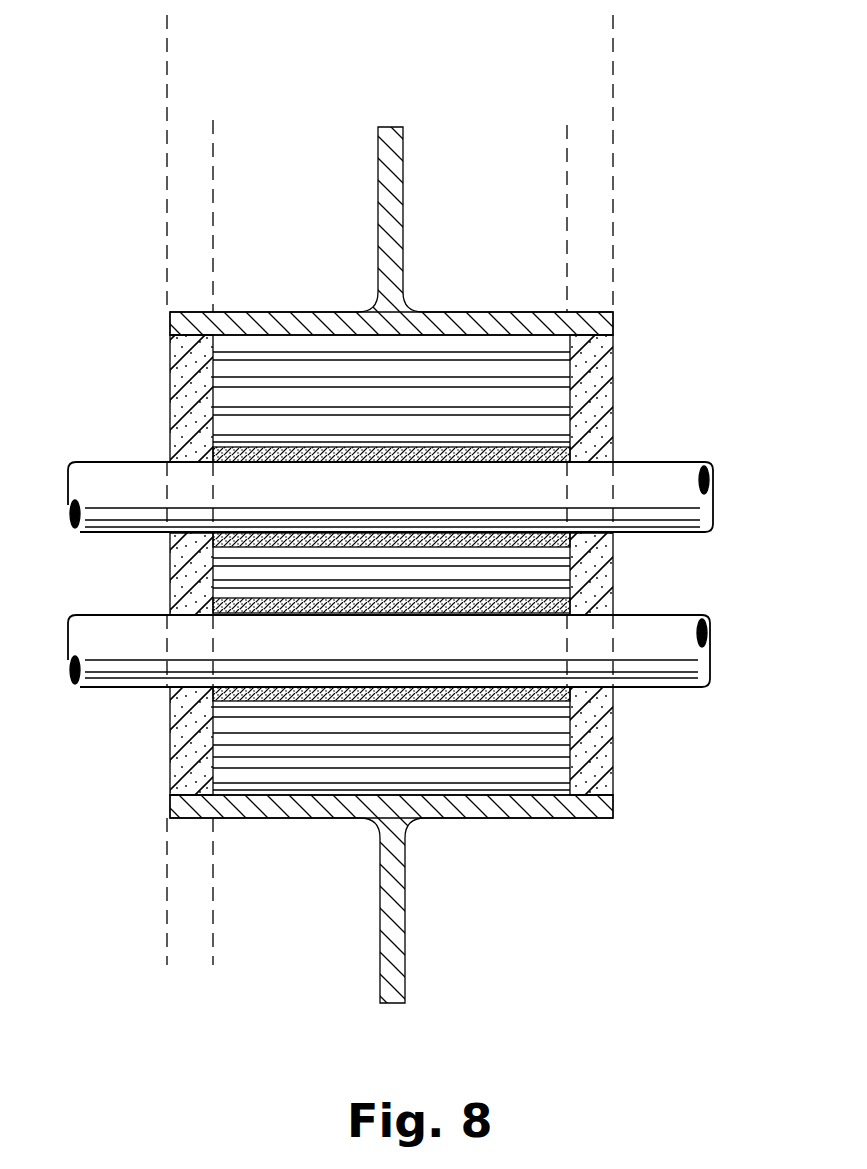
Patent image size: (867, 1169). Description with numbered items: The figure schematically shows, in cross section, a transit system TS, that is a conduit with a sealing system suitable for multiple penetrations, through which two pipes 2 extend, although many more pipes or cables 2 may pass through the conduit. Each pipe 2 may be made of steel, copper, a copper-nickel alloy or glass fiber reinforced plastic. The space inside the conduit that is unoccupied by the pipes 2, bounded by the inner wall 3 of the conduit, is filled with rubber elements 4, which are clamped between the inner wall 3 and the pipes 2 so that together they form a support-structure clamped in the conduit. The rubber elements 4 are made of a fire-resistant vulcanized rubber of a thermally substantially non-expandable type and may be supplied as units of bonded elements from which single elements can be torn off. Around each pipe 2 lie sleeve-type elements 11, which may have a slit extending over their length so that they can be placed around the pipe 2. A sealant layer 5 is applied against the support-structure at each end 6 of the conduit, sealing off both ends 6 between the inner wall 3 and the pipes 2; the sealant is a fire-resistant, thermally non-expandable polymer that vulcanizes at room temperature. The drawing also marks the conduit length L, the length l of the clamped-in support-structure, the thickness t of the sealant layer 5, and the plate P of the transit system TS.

The pipe 2 is at (688, 490).
The inner wall 3 is at (270, 336).
The rubber element 4 is at (356, 350).
The sealant layer 5 is at (590, 412).
The end of the conduit 6 is at (172, 794).
The sleeve element 11 is at (430, 447).
The fin P is at (378, 188).
The transit system TS is at (553, 265).
The overall length L is at (167, 72).
The inner length l is at (213, 223).
The wall thickness t is at (105, 928).